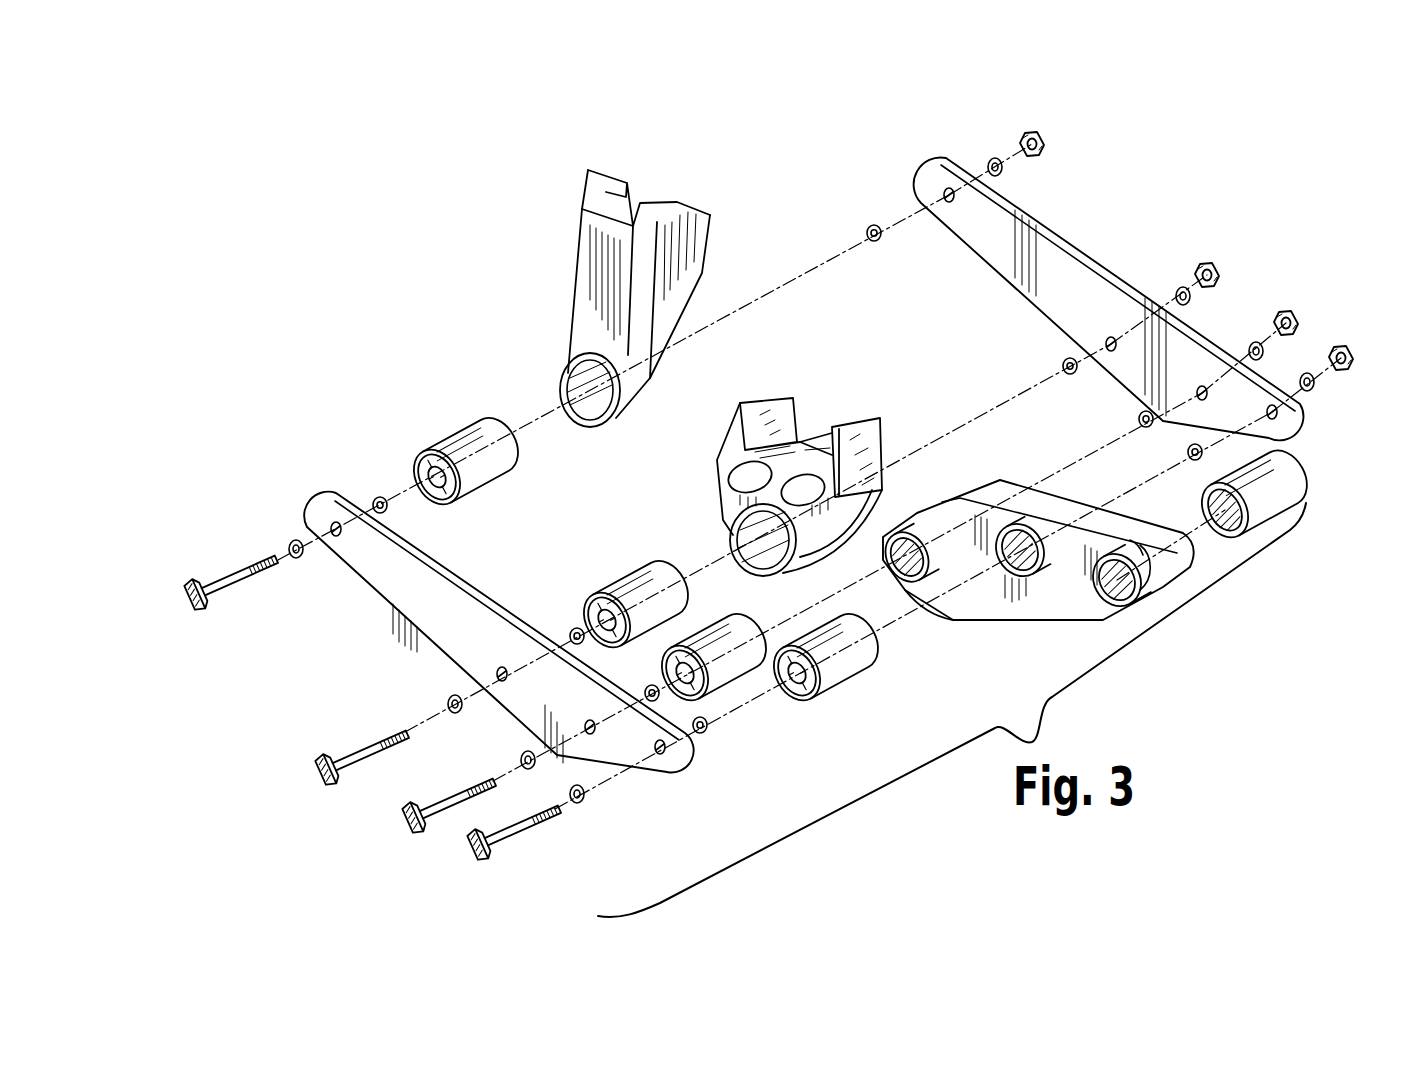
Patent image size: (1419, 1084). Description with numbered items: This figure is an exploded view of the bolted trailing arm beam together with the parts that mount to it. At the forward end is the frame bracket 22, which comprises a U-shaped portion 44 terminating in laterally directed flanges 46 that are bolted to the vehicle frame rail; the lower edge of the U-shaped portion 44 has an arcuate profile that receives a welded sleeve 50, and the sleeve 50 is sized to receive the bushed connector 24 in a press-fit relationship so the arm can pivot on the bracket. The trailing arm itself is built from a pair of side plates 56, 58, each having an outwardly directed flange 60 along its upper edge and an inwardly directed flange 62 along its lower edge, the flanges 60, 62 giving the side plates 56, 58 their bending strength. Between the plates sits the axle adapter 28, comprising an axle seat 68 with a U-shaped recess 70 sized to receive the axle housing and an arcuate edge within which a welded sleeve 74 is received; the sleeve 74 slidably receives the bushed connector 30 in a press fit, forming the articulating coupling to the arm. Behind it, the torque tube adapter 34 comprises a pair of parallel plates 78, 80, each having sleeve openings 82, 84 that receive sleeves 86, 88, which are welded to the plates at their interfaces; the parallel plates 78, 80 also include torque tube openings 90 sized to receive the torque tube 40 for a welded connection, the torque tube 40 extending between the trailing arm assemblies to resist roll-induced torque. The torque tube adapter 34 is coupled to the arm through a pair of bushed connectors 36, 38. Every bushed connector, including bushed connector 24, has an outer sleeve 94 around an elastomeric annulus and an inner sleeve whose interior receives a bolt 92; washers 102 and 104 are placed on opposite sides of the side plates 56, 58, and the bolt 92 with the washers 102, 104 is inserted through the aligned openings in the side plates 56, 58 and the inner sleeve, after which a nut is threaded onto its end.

The frame bracket 22 is at (572, 296).
The bushed connector 24 is at (455, 440).
The axle adapter 28 is at (793, 397).
The bushed connector 30 is at (625, 588).
The torque tube adapter 34 is at (1147, 587).
The bushed connector 36 is at (710, 690).
The bushed connector 38 is at (818, 697).
The torque tube 40 is at (1287, 473).
The U-shaped portion 44 is at (682, 202).
The laterally directed flanges 46 is at (710, 228).
The sleeve 50 is at (563, 390).
The side plate 56 is at (301, 508).
The side plate 58 is at (1065, 226).
The outwardly directed flange 60 is at (470, 580).
The inwardly directed flange 62 is at (407, 620).
The axle seat 68 is at (800, 442).
The U-shaped recess 70 is at (843, 423).
The sleeve 74 is at (777, 573).
The parallel plate 78 is at (973, 490).
The parallel plate 80 is at (1013, 477).
The sleeve opening 82 is at (942, 537).
The sleeve opening 84 is at (1037, 527).
The sleeve 86 is at (908, 583).
The sleeve 88 is at (1003, 580).
The torque tube opening 90 is at (1112, 553).
The bolt 92 is at (188, 585).
The outer sleeve 94 is at (1036, 134).
The washer 102 is at (290, 546).
The washer 104 is at (380, 497).